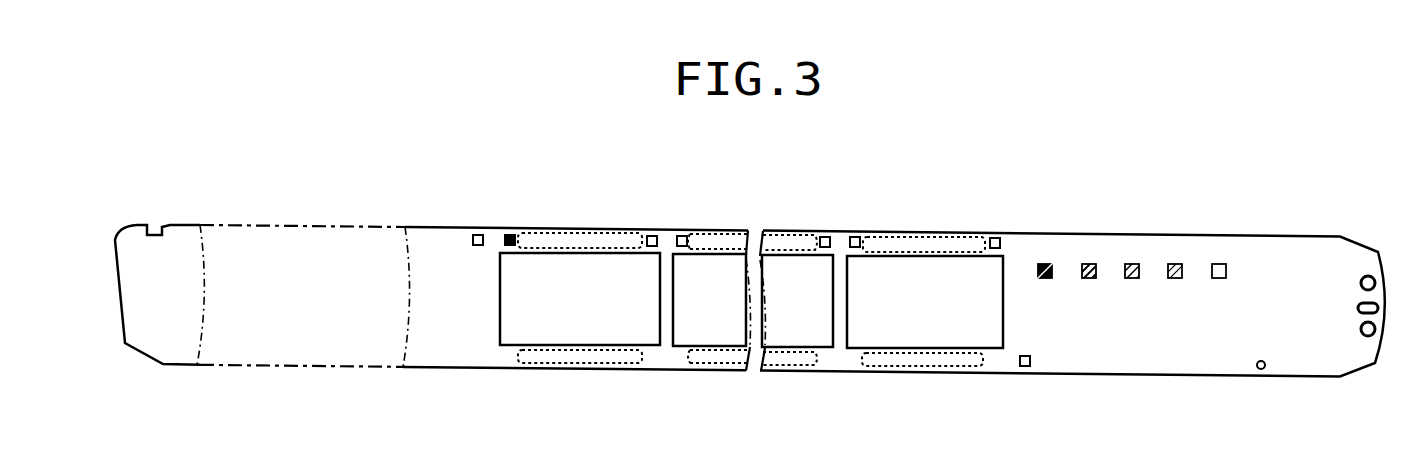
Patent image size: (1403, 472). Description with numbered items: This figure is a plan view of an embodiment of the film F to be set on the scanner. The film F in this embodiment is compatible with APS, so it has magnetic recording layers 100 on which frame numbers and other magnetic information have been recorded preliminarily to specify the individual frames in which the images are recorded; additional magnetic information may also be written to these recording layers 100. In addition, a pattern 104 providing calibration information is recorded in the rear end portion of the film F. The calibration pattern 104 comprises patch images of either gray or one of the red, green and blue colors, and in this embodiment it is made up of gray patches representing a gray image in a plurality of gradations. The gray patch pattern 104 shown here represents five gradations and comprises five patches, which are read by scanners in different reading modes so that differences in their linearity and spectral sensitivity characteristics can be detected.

The film F is at (1011, 232).
The magnetic recording layers 100 is at (550, 252).
The calibration pattern 104 is at (1033, 228).